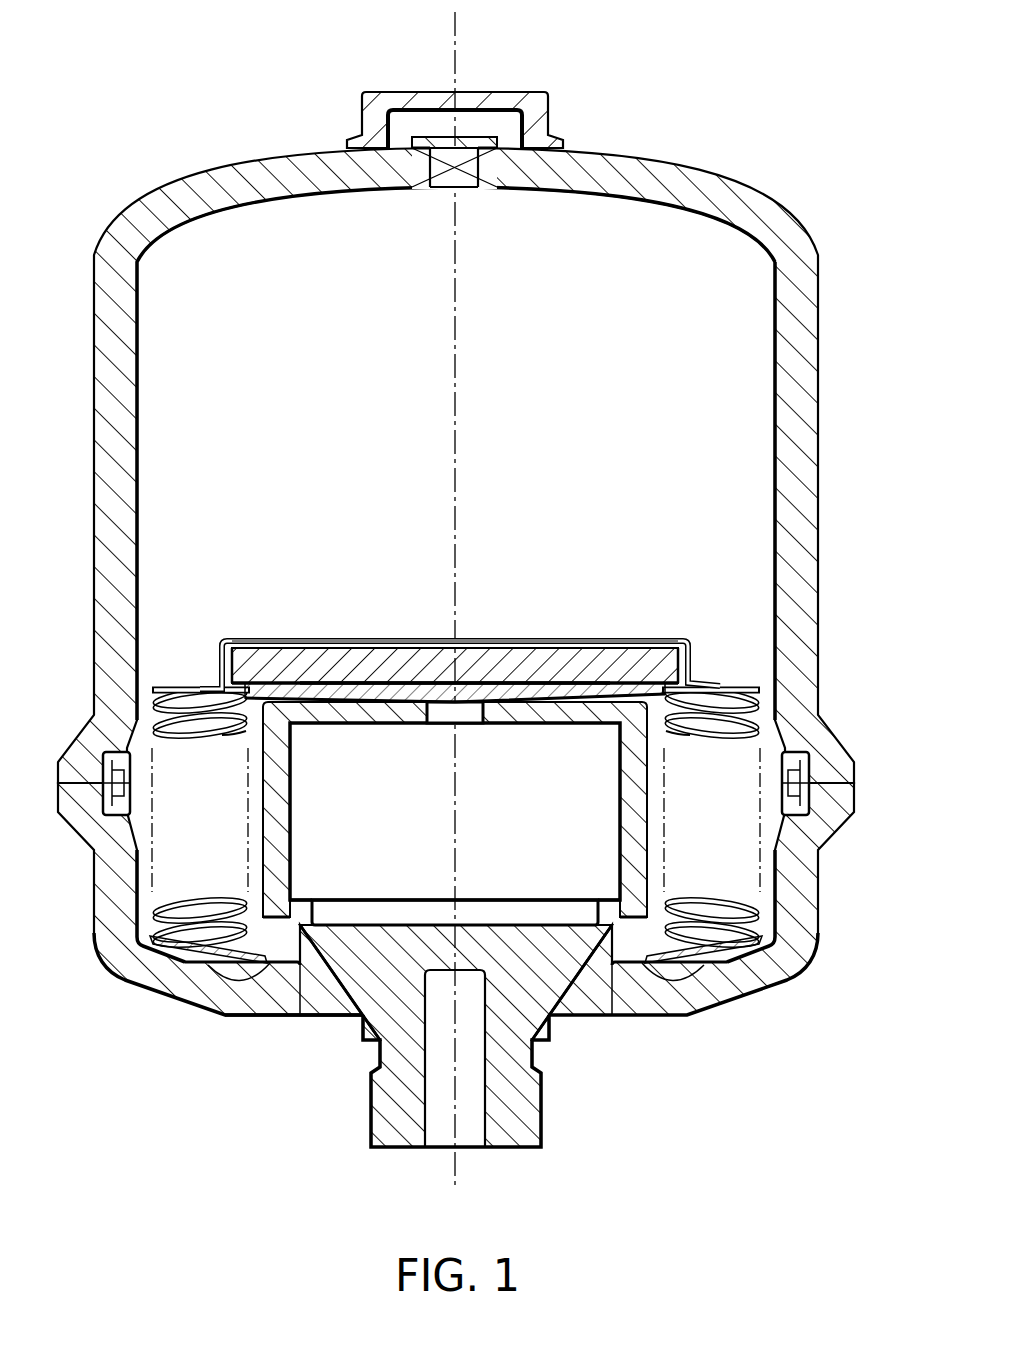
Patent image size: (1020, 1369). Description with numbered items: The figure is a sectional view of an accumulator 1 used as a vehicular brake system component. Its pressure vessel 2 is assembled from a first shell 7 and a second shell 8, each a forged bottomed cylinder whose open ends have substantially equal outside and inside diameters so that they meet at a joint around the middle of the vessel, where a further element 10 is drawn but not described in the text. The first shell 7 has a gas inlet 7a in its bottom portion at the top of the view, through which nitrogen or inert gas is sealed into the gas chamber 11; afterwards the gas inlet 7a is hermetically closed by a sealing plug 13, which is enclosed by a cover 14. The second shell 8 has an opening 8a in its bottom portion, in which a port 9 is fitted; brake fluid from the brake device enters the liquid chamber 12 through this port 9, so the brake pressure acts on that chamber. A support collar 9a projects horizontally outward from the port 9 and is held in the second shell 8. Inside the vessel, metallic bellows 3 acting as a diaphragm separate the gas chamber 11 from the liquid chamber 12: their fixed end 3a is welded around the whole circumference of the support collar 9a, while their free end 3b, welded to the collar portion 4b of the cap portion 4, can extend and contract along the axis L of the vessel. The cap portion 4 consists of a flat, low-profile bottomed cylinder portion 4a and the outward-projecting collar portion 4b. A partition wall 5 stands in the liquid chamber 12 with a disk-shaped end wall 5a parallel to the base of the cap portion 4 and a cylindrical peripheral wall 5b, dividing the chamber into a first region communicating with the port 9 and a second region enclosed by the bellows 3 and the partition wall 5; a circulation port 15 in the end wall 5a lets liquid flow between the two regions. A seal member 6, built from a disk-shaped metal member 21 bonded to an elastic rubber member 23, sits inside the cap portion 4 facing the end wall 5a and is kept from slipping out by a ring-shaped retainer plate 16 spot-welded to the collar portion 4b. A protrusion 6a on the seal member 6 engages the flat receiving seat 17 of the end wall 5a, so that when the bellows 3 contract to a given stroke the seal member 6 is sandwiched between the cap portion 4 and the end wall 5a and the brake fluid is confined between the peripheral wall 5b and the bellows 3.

The accumulator 1 is at (740, 135).
The pressure vessel 2 is at (880, 690).
The metallic bellows 3 is at (152, 917).
The fixed end 3a is at (155, 960).
The free end 3b is at (196, 686).
The cap portion 4 is at (453, 609).
The cylinder portion 4a is at (248, 650).
The collar portion 4b is at (287, 578).
The partition wall 5 is at (410, 784).
The end wall 5a is at (384, 726).
The peripheral wall 5b is at (300, 738).
The seal member 6 is at (453, 652).
The protrusion 6a is at (398, 688).
The first shell 7 is at (822, 719).
The gas inlet 7a is at (474, 170).
The second shell 8 is at (822, 832).
The opening 8a is at (322, 1017).
The port 9 is at (550, 1042).
The support collar 9a is at (208, 967).
The clamp ring 10 is at (788, 818).
The gas chamber 11 is at (565, 376).
The liquid chamber 12 is at (515, 834).
The sealing plug 13 is at (500, 137).
The cover 14 is at (542, 100).
The circulation port 15 is at (440, 701).
The retainer plate 16 is at (233, 724).
The receiving seat 17 is at (308, 665).
The metal member 21 is at (542, 662).
The elastic rubber member 23 is at (560, 660).
The axis L is at (457, 52).